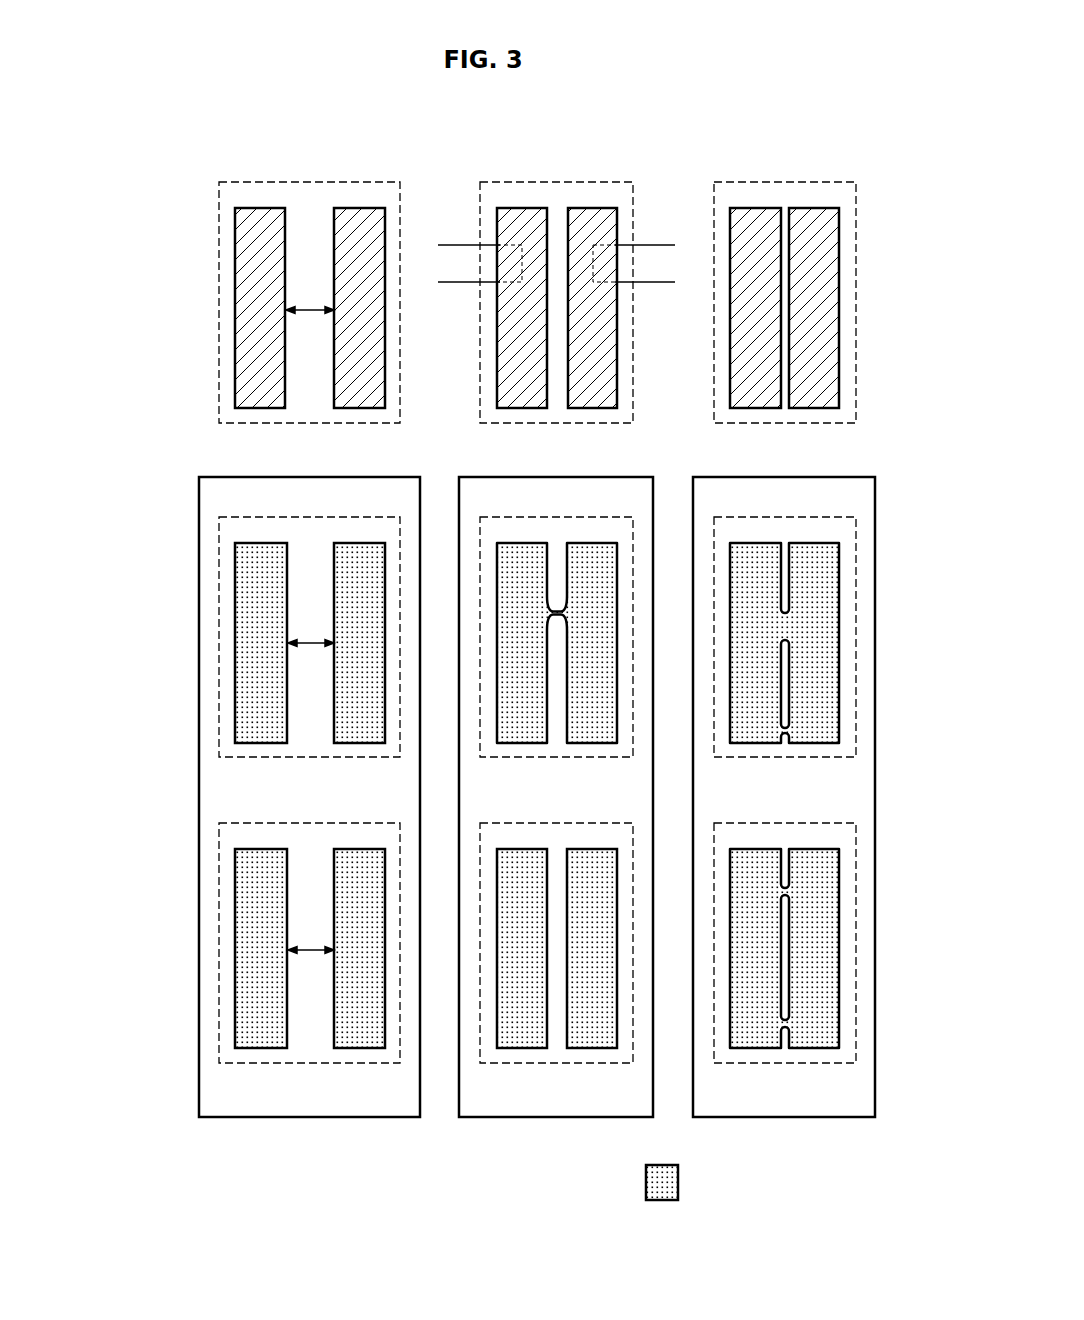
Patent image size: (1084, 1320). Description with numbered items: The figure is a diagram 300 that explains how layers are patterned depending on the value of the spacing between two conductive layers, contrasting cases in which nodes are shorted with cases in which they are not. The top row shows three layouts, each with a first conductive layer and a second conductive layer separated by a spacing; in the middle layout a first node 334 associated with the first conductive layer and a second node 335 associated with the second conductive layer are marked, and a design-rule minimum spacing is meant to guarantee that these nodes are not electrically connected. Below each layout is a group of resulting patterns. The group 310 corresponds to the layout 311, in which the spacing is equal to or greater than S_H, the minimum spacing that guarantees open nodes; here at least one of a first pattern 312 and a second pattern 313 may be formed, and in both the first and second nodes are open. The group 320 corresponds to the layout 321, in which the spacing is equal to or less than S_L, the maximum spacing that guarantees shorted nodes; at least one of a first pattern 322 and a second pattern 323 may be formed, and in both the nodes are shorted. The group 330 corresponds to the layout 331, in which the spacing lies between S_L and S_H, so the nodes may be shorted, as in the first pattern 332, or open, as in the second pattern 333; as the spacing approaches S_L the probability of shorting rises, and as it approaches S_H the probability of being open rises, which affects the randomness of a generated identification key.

The layout and pattern comparison diagram 300 is at (537, 129).
The layout 311 is at (310, 182).
The layout 331 is at (558, 182).
The layout 321 is at (785, 182).
The first node 334 is at (449, 284).
The second node 335 is at (665, 284).
The group 310 is at (311, 477).
The group 330 is at (557, 477).
The group 320 is at (787, 477).
The pattern 1 312 is at (327, 517).
The pattern 2 313 is at (327, 823).
The pattern 1 332 is at (560, 517).
The pattern 2 333 is at (560, 823).
The pattern 1 322 is at (782, 517).
The pattern 2 323 is at (782, 823).